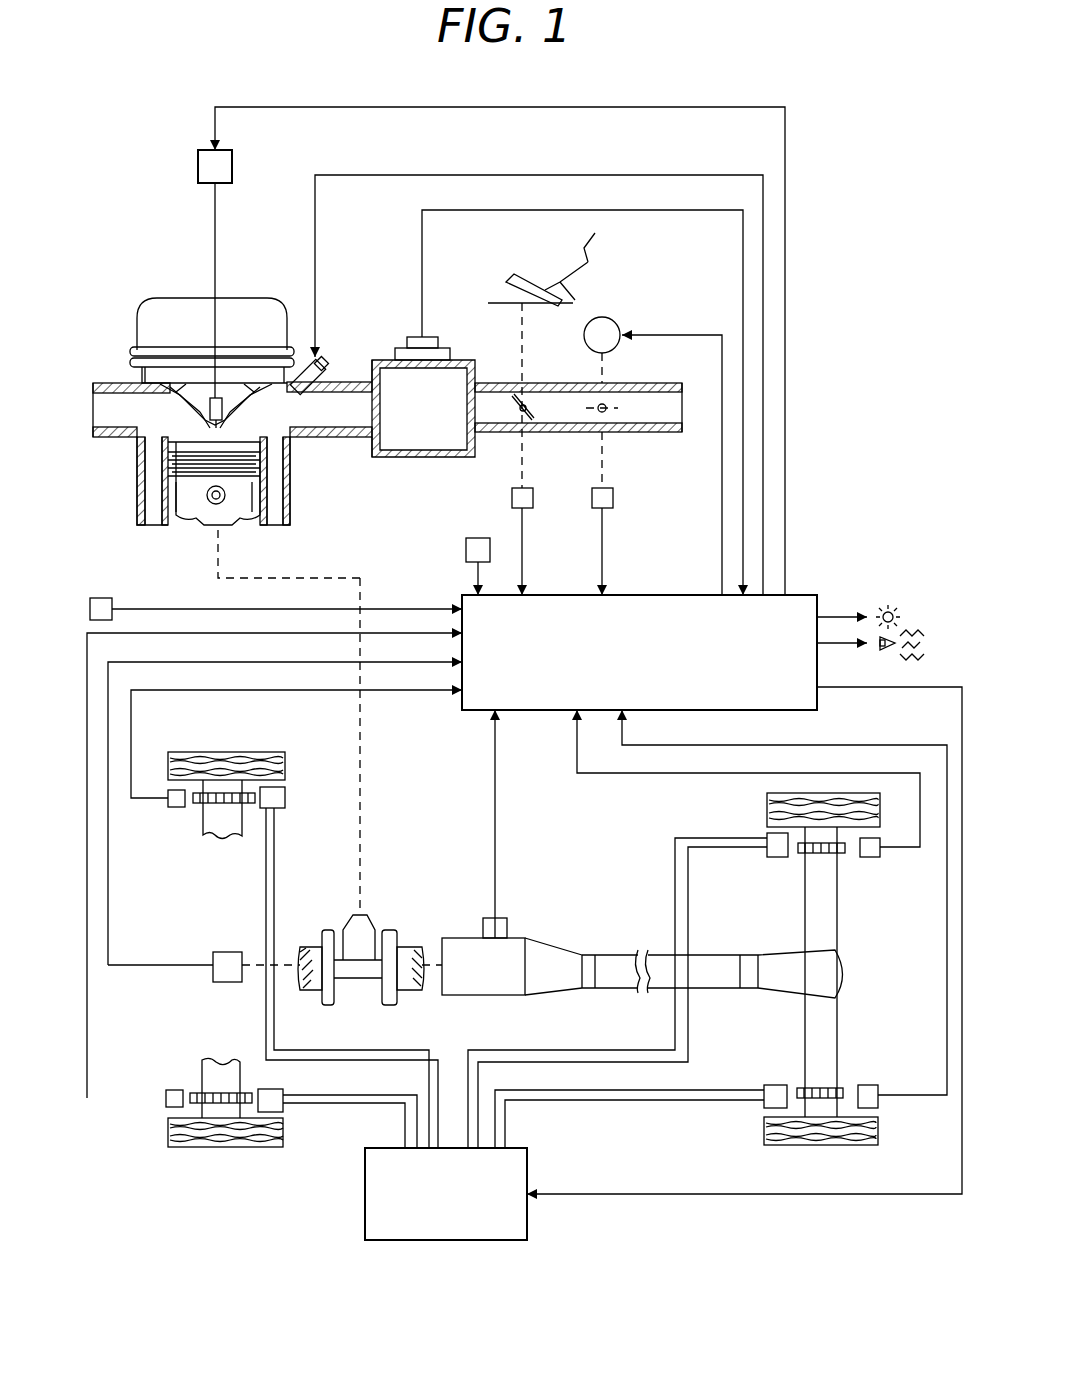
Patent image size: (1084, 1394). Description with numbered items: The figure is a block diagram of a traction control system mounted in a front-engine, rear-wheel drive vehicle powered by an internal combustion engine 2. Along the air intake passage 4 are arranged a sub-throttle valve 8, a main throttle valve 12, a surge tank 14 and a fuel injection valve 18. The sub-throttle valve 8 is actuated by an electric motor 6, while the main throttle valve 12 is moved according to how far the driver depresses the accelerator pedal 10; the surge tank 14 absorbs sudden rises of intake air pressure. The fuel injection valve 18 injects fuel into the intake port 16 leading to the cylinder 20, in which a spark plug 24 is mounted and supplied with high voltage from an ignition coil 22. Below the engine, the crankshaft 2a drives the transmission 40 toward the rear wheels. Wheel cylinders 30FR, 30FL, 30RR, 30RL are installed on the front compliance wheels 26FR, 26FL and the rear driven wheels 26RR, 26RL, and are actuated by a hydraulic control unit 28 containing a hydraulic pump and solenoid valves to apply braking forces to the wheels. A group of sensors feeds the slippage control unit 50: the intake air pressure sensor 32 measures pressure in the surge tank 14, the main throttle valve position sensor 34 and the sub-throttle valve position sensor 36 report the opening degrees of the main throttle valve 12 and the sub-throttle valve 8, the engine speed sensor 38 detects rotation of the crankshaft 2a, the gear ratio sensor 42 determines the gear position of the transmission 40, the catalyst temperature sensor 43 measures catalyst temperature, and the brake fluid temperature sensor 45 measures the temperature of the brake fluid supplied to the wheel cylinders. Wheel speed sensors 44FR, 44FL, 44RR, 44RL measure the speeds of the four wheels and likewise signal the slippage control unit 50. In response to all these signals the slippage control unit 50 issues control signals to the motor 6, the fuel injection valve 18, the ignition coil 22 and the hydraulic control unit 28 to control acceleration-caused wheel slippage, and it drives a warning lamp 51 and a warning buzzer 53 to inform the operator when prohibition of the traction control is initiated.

The internal combustion engine 2 is at (252, 297).
The crankshaft 2a is at (397, 945).
The air intake passage 4 is at (360, 440).
The electric motor 6 is at (618, 315).
The sub-throttle valve 8 is at (595, 405).
The accelerator pedal 10 is at (512, 280).
The main throttle valve 12 is at (518, 400).
The surge tank 14 is at (425, 458).
The intake port 16 is at (283, 408).
The fuel injection valve 18 is at (322, 362).
The cylinder 20 is at (168, 445).
The ignition coil 22 is at (198, 165).
The spark plug 24 is at (210, 400).
The front compliance wheel 26FR is at (235, 752).
The front compliance wheel 26FL is at (205, 1147).
The rear driven wheel 26RR is at (868, 793).
The rear driven wheel 26RL is at (820, 1145).
The hydraulic control unit 28 is at (530, 1165).
The wheel cylinder 30FR is at (278, 808).
The wheel cylinder 30FL is at (283, 1092).
The wheel cylinder 30RR is at (773, 857).
The wheel cylinder 30RL is at (770, 1085).
The intake air pressure sensor 32 is at (440, 337).
The main throttle valve position sensor 34 is at (533, 496).
The sub-throttle valve position sensor 36 is at (613, 498).
The engine speed sensor 38 is at (225, 952).
The transmission 40 is at (478, 996).
The gear ratio sensor 42 is at (507, 928).
The catalyst temperature sensor 43 is at (108, 598).
The wheel speed sensor 44FR is at (175, 807).
The wheel speed sensor 44FL is at (166, 1093).
The wheel speed sensor 44RR is at (870, 857).
The wheel speed sensor 44RL is at (870, 1085).
The brake fluid temperature sensor 45 is at (466, 550).
The slippage control unit 50 is at (642, 595).
The warning lamp 51 is at (892, 605).
The warning buzzer 53 is at (884, 652).